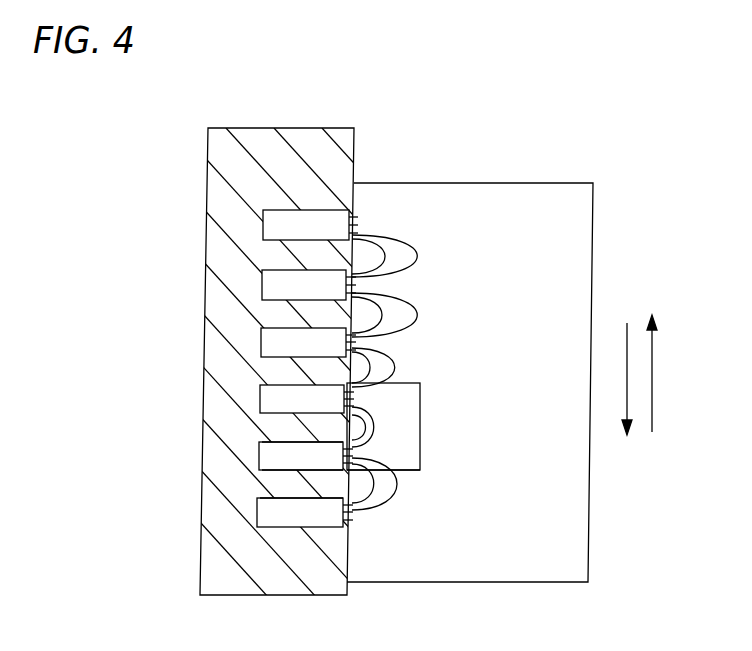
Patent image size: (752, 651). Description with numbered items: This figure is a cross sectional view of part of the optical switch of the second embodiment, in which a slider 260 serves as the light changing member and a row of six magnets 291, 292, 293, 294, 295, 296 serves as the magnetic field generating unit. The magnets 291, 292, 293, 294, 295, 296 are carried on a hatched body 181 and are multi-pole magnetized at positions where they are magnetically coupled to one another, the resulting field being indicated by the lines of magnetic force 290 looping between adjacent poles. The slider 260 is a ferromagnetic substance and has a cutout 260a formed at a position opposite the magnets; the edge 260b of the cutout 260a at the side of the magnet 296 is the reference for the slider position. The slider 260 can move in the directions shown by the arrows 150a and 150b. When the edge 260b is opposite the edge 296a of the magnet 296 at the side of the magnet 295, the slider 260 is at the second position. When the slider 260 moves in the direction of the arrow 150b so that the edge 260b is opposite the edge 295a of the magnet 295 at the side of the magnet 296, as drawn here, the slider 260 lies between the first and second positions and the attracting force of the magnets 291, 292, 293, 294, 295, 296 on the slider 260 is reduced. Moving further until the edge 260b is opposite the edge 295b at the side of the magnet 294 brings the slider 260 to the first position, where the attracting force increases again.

The yoke (back plate) 181 is at (277, 128).
The lines of magnetic force 290 is at (388, 235).
The magnet 291 is at (274, 229).
The magnet 292 is at (273, 286).
The magnet 293 is at (272, 341).
The magnet 294 is at (271, 400).
The magnet 295 is at (269, 457).
The edge of magnet 295 295a is at (288, 471).
The edge of magnet 295 295b is at (296, 441).
The magnet 296 is at (270, 514).
The edge of magnet 296 296a is at (290, 498).
The slider 260 is at (578, 257).
The cutout 260a is at (413, 448).
The edge of the cutout 260b is at (405, 470).
The arrow 150a is at (628, 397).
The arrow 150b is at (652, 388).